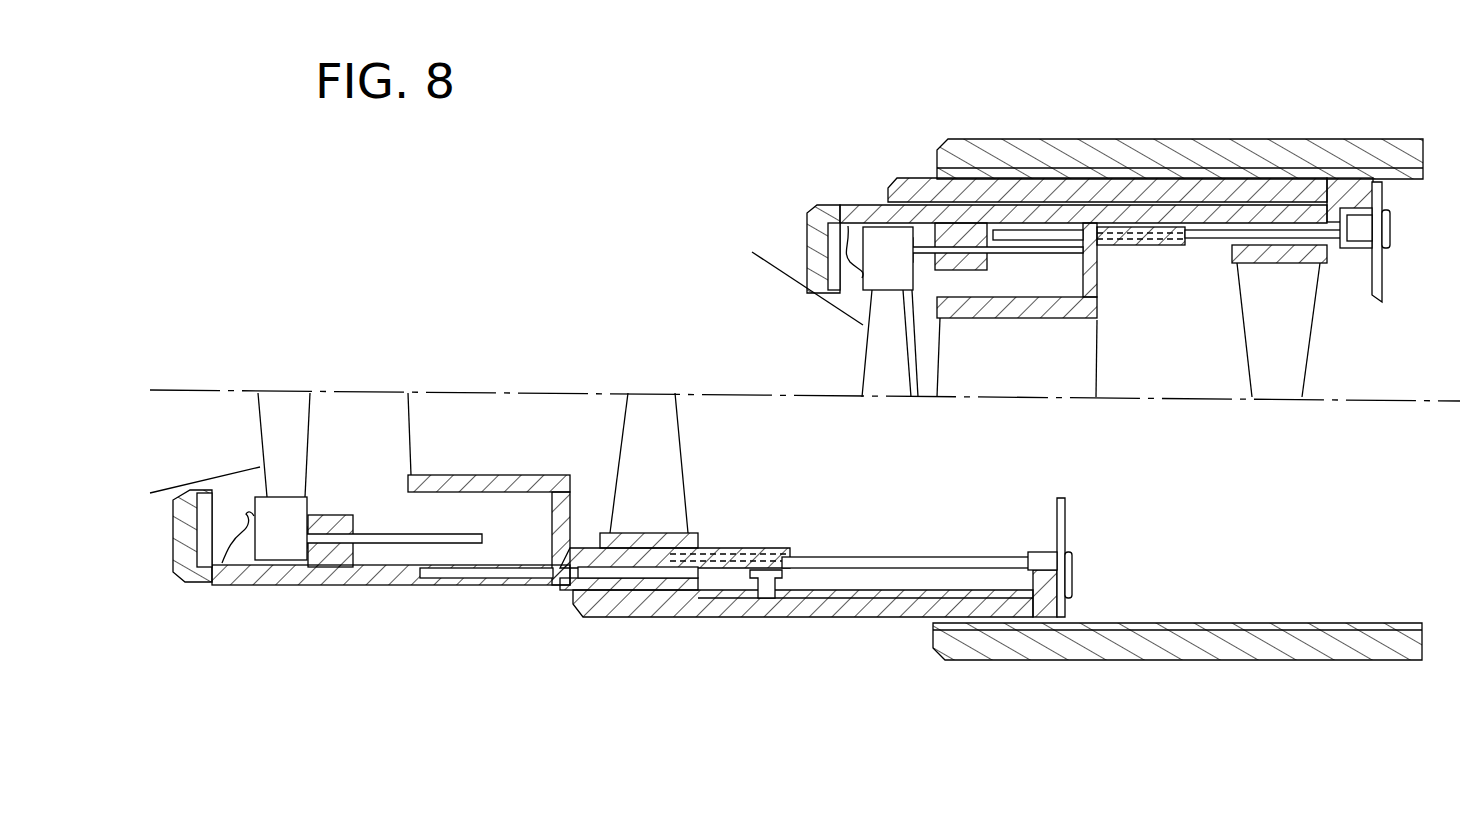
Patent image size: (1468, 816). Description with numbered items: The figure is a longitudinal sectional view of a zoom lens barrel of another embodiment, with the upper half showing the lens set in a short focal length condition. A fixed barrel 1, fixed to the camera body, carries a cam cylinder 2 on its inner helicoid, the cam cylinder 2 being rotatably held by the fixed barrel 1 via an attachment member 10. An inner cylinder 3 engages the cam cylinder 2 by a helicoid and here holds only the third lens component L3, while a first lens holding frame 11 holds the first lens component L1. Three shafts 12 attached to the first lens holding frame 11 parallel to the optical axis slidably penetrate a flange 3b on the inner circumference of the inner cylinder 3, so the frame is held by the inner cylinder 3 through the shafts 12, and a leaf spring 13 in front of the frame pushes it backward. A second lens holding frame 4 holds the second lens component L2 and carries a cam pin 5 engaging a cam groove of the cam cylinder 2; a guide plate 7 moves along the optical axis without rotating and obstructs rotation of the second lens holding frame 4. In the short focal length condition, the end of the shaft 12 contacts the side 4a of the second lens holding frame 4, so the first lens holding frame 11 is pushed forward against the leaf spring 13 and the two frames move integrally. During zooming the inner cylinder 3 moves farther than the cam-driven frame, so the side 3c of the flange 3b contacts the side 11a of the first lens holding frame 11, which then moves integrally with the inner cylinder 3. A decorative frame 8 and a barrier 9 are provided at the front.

The fixed barrel 1 is at (1207, 140).
The cam cylinder 2 is at (913, 177).
The inner cylinder 3 is at (853, 203).
The flange 3b is at (950, 270).
The side of flange 3c is at (948, 325).
The second lens holding frame 4 is at (1132, 245).
The side of second lens holding frame 4a is at (1085, 241).
The cam pin 5 is at (780, 588).
The guide plate 7 is at (1212, 240).
The decorative frame 8 is at (807, 237).
The barrier 9 is at (843, 263).
The attachment member 10 is at (1385, 223).
The first lens holding frame 11 is at (862, 295).
The side of first lens holding frame 11a is at (915, 295).
The shaft 12 is at (1010, 253).
The leaf spring 13 is at (847, 265).
The first lens component L1 is at (855, 391).
The second lens component L2 is at (1098, 372).
The third lens component L3 is at (1305, 360).